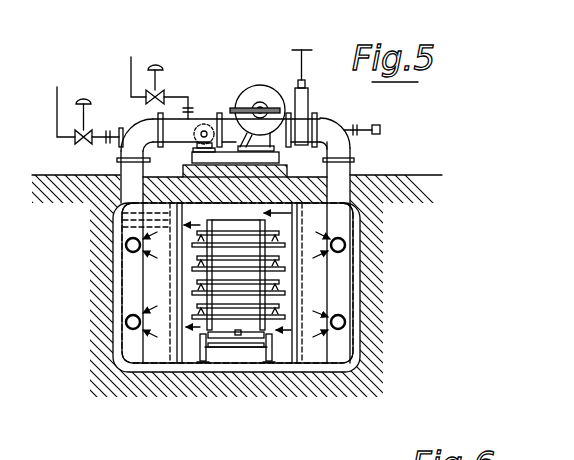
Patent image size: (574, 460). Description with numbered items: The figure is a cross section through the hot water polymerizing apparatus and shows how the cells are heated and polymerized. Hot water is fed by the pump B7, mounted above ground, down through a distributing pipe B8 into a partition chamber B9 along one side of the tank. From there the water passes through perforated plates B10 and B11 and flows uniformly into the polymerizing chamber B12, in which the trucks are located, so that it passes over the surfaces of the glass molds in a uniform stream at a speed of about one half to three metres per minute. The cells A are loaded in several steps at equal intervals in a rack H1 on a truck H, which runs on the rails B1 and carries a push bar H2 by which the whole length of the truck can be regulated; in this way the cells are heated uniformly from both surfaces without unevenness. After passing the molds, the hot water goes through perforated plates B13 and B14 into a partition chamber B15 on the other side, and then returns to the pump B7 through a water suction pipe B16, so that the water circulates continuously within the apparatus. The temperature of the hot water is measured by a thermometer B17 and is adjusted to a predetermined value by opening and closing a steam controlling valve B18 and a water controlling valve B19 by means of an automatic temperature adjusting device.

The steam controlling valve B18 is at (82, 99).
The water controlling valve B19 is at (155, 65).
The pump B7 is at (255, 85).
The thermometer B17 is at (382, 127).
The water suction pipe B16 is at (122, 247).
The cells A is at (197, 258).
The distributing pipe B8 is at (347, 316).
The perforated plate B13 is at (182, 328).
The perforated plate B14 is at (178, 350).
The partition chamber B15 is at (158, 363).
The rails B1 is at (182, 347).
The truck H is at (222, 334).
The push bar H2 is at (240, 335).
The polymerizing chamber B12 is at (257, 363).
The perforated plate B11 is at (295, 345).
The perforated plate B10 is at (305, 345).
The rack H1 is at (318, 325).
The partition chamber B9 is at (340, 364).